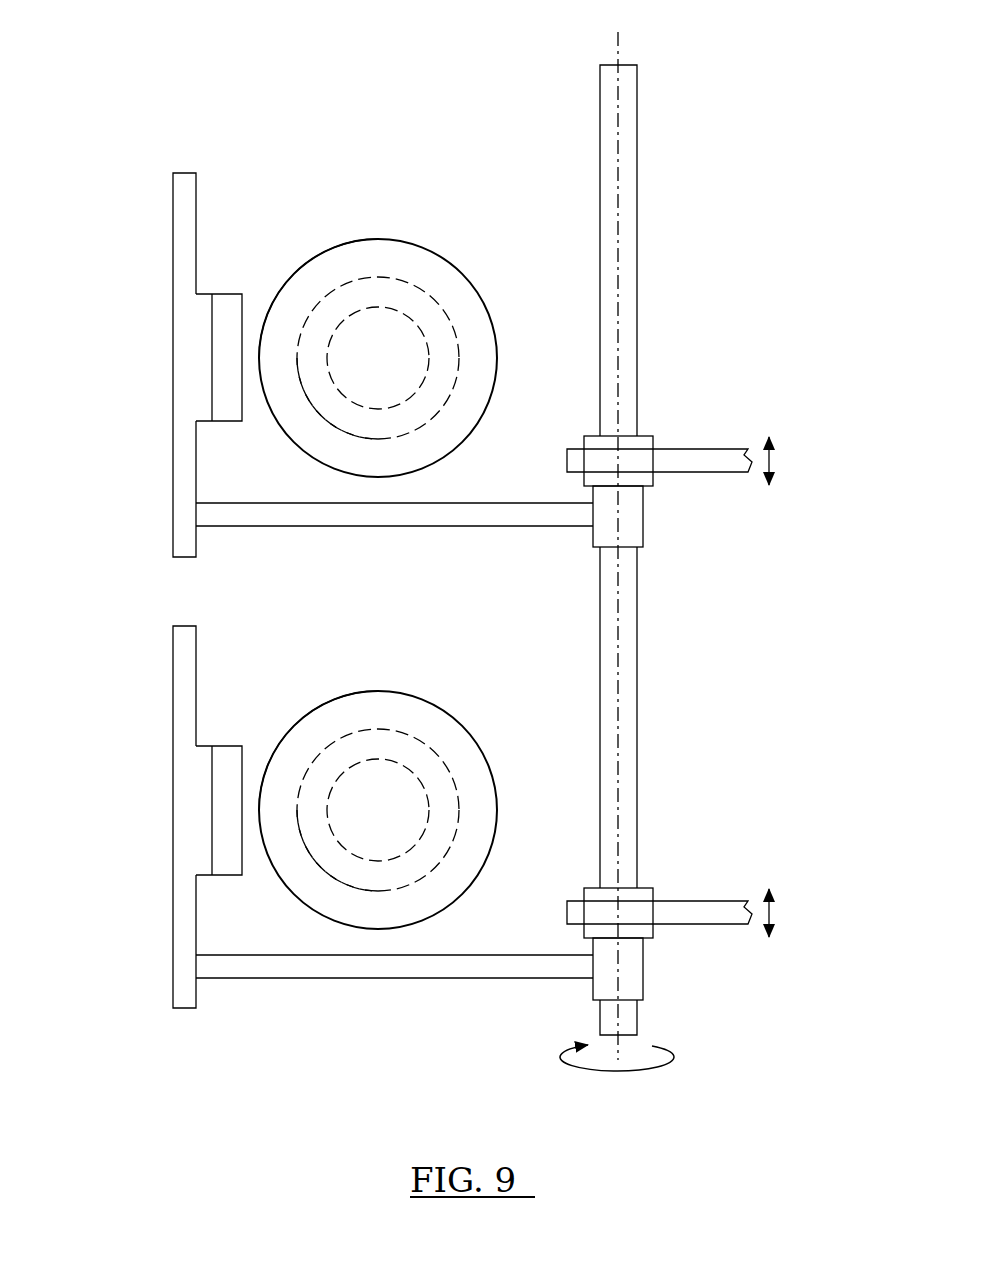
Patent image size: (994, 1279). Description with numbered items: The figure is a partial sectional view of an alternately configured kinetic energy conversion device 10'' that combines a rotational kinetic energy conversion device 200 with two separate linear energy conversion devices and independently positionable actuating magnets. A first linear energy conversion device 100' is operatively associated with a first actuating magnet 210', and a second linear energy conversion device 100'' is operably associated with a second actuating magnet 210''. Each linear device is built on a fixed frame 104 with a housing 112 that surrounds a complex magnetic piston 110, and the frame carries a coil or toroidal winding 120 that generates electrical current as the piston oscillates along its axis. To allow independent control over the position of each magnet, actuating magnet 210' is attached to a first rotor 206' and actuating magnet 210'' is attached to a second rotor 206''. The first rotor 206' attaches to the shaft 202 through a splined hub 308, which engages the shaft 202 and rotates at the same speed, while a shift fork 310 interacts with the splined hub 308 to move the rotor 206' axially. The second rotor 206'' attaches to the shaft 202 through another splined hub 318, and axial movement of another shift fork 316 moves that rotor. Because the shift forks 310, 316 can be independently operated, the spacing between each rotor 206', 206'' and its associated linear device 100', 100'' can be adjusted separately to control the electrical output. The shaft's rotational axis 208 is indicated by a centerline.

The kinetic energy conversion device 10'' is at (412, 538).
The first linear energy conversion device 100' is at (378, 313).
The second linear energy conversion device 100'' is at (396, 798).
The fixed frame 104 is at (320, 253).
The complex magnetic piston 110 is at (383, 408).
The housing 112 is at (295, 275).
The coil or toroidal winding 120 is at (354, 462).
The rotational kinetic energy conversion device 200 is at (648, 118).
The shaft 202 is at (640, 672).
The first rotor 206' is at (335, 365).
The second rotor 206'' is at (336, 817).
The axis of rotation 208 is at (620, 38).
The first actuating magnet 210' is at (171, 355).
The second actuating magnet 210'' is at (170, 819).
The splined hub 308 is at (592, 541).
The shift fork 310 is at (722, 475).
The shift fork 316 is at (722, 927).
The splined hub 318 is at (592, 993).